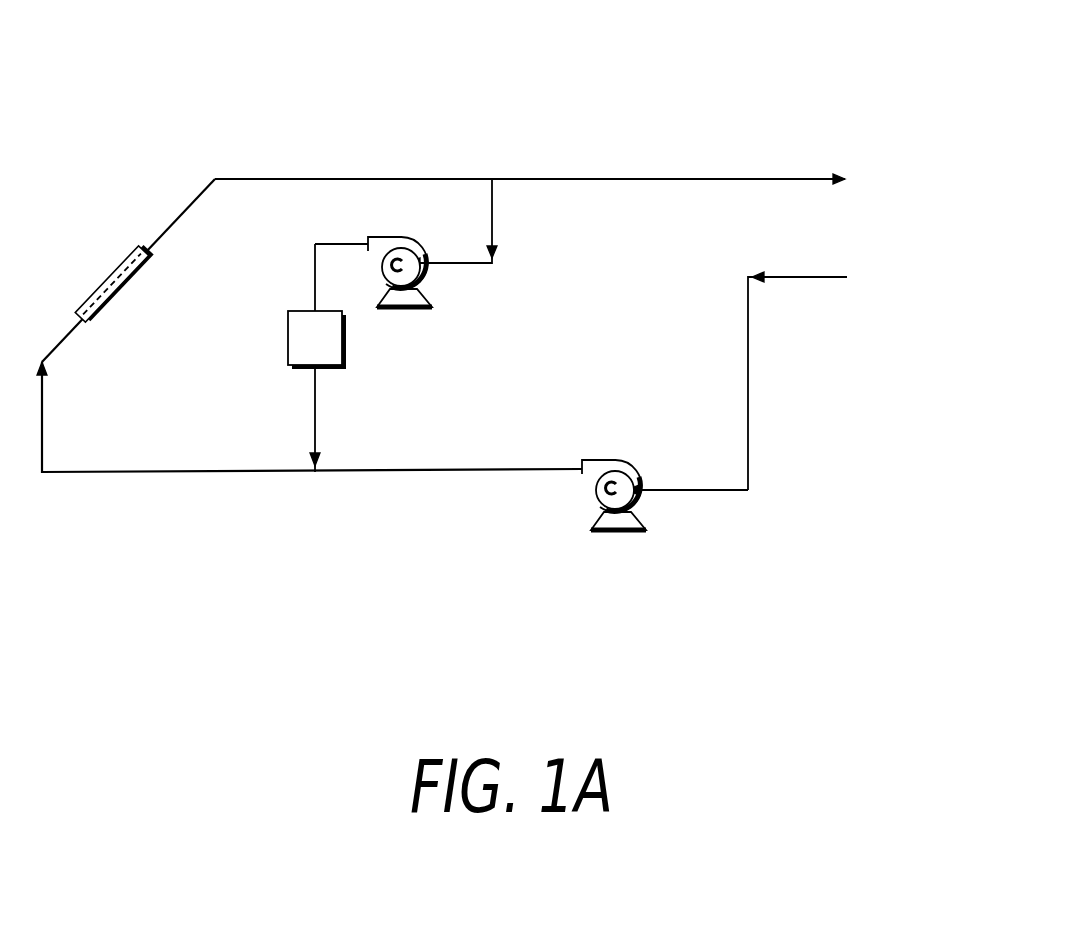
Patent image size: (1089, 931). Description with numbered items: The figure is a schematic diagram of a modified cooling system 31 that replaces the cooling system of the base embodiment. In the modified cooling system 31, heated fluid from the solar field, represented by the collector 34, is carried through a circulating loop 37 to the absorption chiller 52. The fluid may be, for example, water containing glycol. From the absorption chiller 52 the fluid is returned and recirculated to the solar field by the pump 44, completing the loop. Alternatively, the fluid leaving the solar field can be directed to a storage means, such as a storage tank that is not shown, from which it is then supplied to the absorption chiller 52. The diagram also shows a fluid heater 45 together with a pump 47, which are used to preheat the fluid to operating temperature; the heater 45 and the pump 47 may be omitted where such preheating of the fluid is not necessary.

The modified cooling system 31 is at (557, 140).
The collector 34 is at (102, 283).
The circulating loop 37 is at (287, 179).
The pump 44 is at (590, 498).
The fluid heater 45 is at (288, 326).
The pump 47 is at (423, 288).
The absorption chiller 52 is at (970, 227).